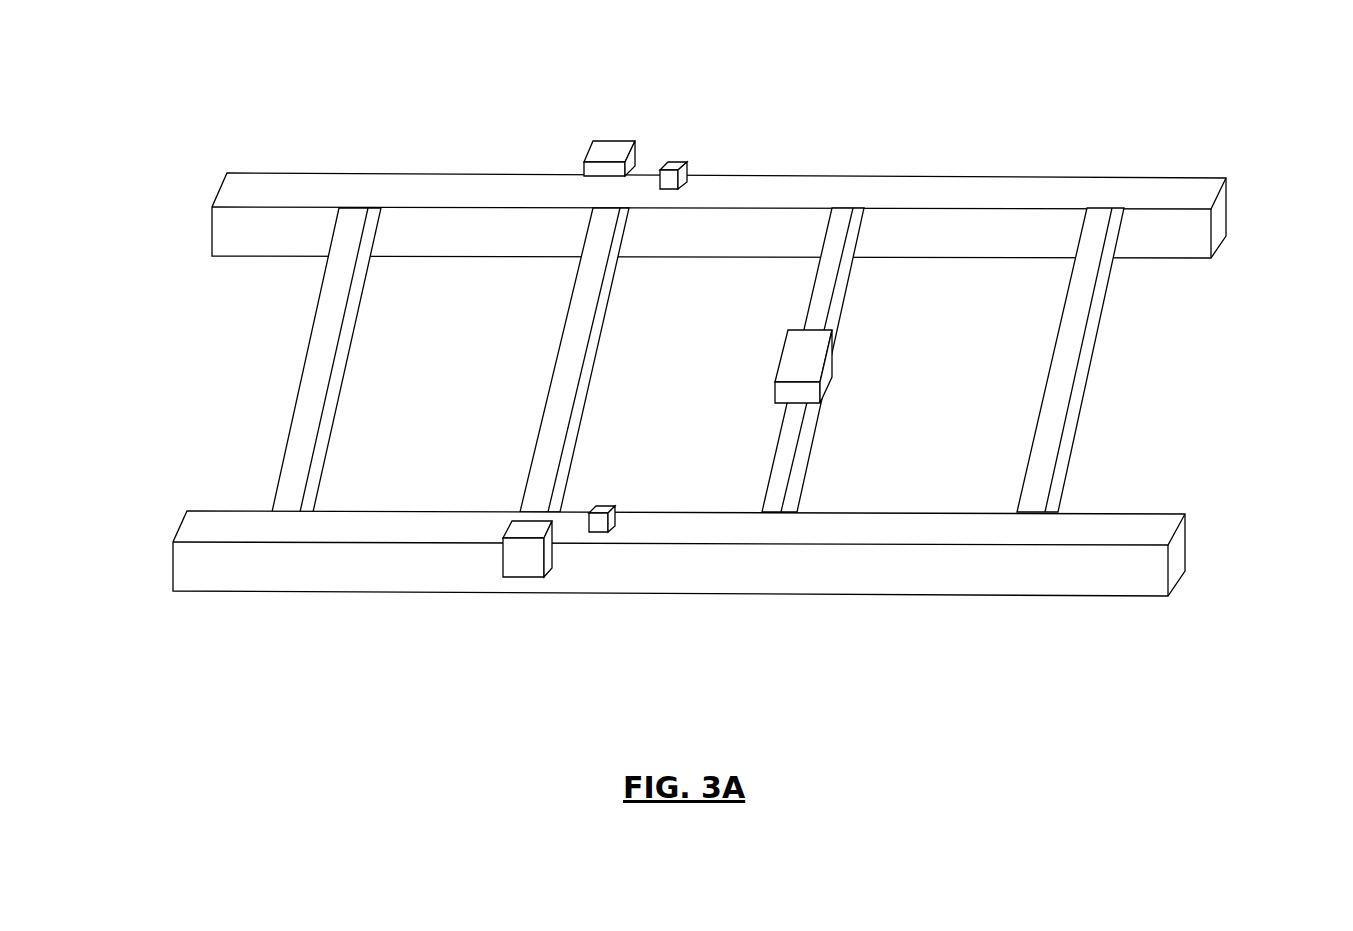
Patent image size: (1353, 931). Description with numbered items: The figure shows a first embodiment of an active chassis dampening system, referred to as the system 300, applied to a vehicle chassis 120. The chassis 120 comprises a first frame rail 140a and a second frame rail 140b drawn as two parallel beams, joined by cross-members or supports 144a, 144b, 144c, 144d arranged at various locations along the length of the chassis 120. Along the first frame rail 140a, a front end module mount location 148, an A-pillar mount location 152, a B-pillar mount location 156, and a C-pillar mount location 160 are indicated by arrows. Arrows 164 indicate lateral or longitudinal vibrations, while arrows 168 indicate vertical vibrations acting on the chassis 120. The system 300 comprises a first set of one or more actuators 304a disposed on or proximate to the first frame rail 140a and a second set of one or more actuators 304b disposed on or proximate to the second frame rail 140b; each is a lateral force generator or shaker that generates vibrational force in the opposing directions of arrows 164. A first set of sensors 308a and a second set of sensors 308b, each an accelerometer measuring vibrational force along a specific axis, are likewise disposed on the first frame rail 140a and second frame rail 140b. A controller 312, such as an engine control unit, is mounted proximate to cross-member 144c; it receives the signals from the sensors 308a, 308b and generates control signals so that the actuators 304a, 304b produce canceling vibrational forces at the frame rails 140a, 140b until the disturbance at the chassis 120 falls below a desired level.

The chassis 120 is at (204, 88).
The first embodiment of active chassis dampening system 300 is at (870, 86).
The first frame rail 140a is at (953, 512).
The second frame rail 140b is at (450, 176).
The cross-member 144a is at (306, 367).
The cross-member 144b is at (555, 367).
The cross-member 144c is at (810, 467).
The cross-member 144d is at (1050, 370).
The front end module mount location 148 is at (227, 604).
The A-pillar mount location 152 is at (423, 605).
The B-pillar mount location 156 is at (668, 606).
The C-pillar mount location 160 is at (916, 606).
The lateral or longitudinal vibration arrows 164 is at (1316, 559).
The vertical vibration arrows 168 is at (128, 516).
The first set of actuators 304a is at (526, 577).
The second set of actuators 304b is at (585, 150).
The first set of sensors 308a is at (606, 506).
The second set of sensors 308b is at (672, 162).
The controller 312 is at (775, 362).